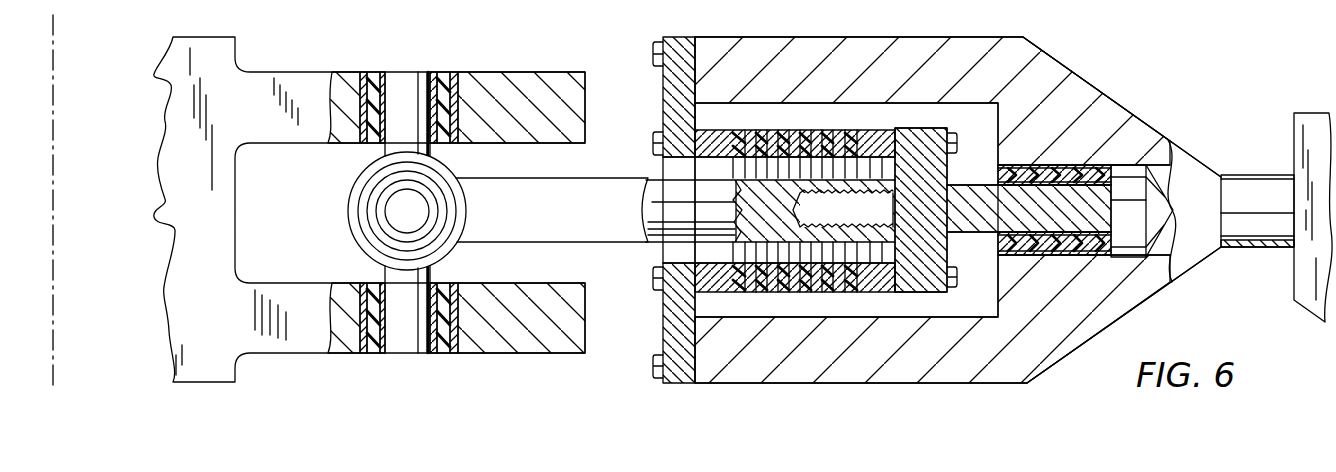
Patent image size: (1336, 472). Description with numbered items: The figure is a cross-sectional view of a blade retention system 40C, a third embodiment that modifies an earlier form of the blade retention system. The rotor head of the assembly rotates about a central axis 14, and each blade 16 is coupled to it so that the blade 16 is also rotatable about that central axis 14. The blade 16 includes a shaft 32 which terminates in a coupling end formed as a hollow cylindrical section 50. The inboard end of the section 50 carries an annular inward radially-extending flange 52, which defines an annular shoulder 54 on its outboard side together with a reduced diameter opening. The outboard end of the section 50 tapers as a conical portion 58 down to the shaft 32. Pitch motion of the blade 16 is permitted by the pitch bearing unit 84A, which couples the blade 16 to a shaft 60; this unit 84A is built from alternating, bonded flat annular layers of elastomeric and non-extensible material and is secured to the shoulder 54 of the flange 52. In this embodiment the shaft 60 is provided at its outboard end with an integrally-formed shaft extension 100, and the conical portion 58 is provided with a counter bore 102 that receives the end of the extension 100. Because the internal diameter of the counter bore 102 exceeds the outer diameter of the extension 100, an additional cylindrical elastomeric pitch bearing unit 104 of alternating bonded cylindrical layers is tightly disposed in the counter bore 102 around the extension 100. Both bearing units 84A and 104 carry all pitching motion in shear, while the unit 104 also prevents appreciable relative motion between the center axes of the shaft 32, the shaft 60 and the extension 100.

The central axis 14 is at (53, 167).
The blade 16 is at (1305, 127).
The shaft 32 is at (1266, 175).
The blade retention system 40C is at (1018, 383).
The hollow cylindrical section 50 is at (914, 37).
The flange 52 is at (657, 127).
The annular shoulder 54 is at (688, 117).
The conical portion 58 is at (1065, 86).
The shaft 60 is at (548, 178).
The pitch bearing unit 84A is at (820, 127).
The shaft extension 100 is at (965, 206).
The counter bore 102 is at (1065, 168).
The cylindrical elastomeric pitch bearing unit 104 is at (1100, 166).